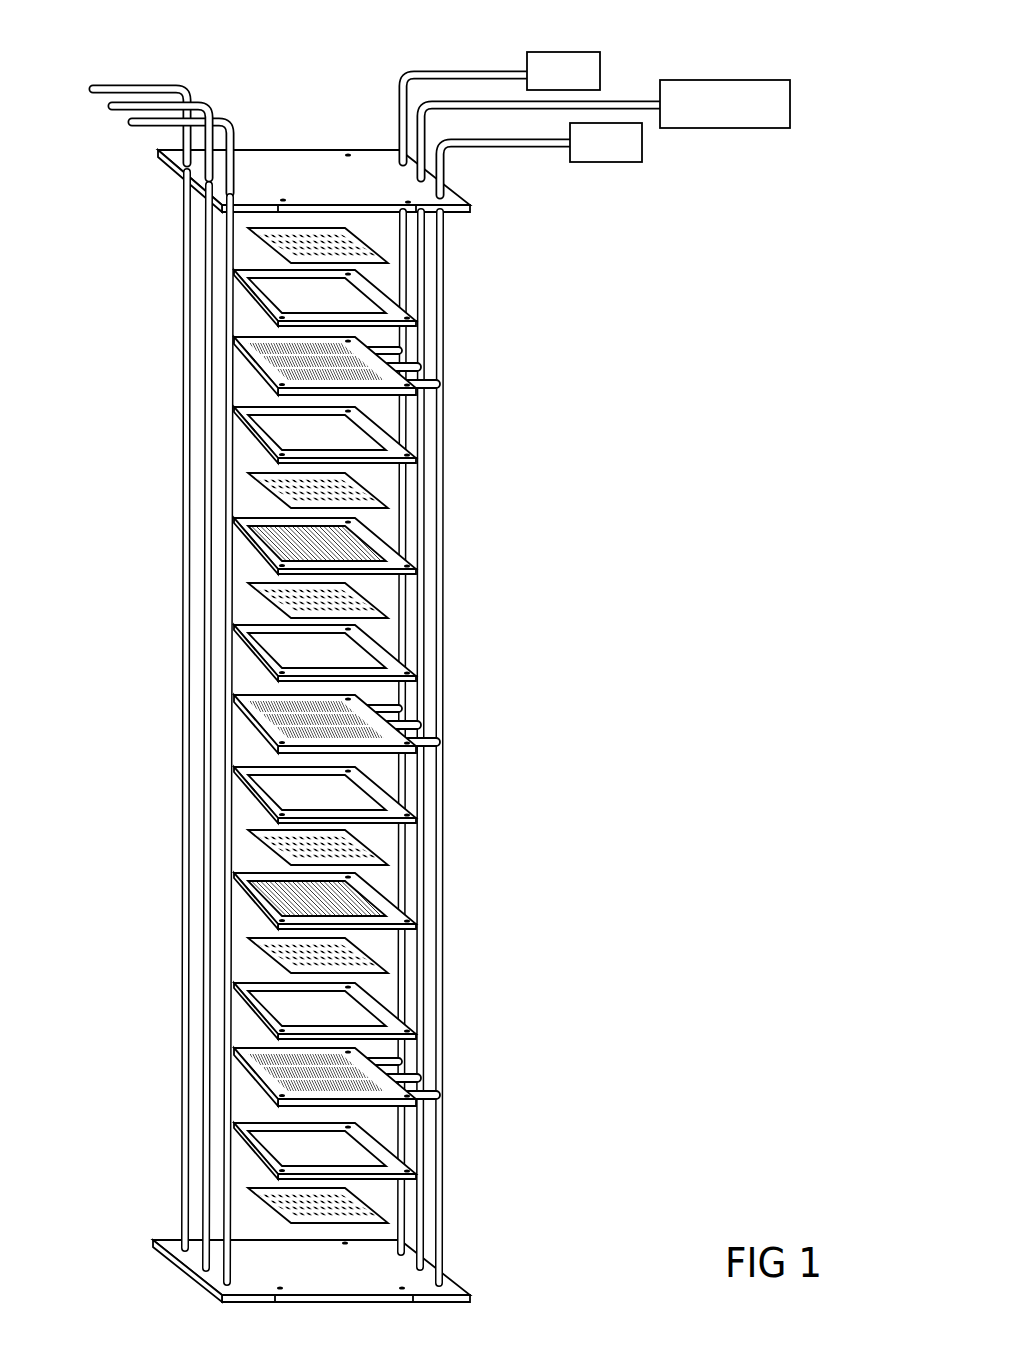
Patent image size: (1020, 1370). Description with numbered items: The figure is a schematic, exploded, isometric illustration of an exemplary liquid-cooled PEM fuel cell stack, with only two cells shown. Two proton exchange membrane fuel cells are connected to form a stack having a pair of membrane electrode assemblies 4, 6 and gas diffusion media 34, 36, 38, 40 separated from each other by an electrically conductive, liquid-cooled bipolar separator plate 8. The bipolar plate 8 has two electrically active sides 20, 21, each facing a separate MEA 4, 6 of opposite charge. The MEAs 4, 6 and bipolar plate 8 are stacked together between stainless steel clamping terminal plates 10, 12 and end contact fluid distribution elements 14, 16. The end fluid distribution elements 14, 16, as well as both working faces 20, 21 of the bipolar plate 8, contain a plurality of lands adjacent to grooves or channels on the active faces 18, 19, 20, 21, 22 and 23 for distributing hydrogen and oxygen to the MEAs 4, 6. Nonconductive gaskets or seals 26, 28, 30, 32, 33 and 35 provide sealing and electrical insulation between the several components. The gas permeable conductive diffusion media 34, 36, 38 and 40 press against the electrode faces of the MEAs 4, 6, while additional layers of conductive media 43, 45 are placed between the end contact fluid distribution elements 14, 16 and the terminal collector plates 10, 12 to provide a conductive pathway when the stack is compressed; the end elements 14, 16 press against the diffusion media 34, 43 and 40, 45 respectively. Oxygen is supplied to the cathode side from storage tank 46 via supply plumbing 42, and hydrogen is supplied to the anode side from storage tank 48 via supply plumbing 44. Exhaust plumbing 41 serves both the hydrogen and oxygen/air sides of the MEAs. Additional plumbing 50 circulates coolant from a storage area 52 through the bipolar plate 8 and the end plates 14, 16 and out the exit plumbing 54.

The membrane electrode assembly 4 is at (247, 548).
The membrane electrode assembly 6 is at (392, 890).
The bipolar separator plate 8 is at (268, 756).
The clamping terminal plate 10 is at (340, 190).
The clamping terminal plate 12 is at (353, 1283).
The end contact fluid distribution element 14 is at (317, 364).
The end contact fluid distribution element 16 is at (324, 1113).
The active face 18 is at (355, 357).
The active face 19 is at (380, 400).
The electrically active side 20 is at (263, 703).
The electrically active side 21 is at (263, 750).
The active face 22 is at (370, 1082).
The active face 23 is at (268, 1107).
The nonconductive gasket 26 is at (253, 432).
The nonconductive gasket 28 is at (265, 652).
The nonconductive gasket 30 is at (390, 793).
The nonconductive gasket 32 is at (265, 1010).
The nonconductive gasket 33 is at (377, 1140).
The gas diffusion medium 34 is at (267, 485).
The nonconductive gasket 35 is at (270, 300).
The gas diffusion medium 36 is at (267, 595).
The gas diffusion medium 38 is at (268, 845).
The gas diffusion medium 40 is at (265, 955).
The exhaust plumbing 41 is at (150, 85).
The supply plumbing 42 is at (400, 107).
The conductive medium 43 is at (258, 237).
The supply plumbing 44 is at (445, 167).
The conductive medium 45 is at (268, 1205).
The storage tank 46 is at (588, 60).
The storage tank 48 is at (635, 162).
The coolant plumbing 50 is at (620, 105).
The coolant storage area 52 is at (703, 87).
The exit plumbing 54 is at (193, 100).